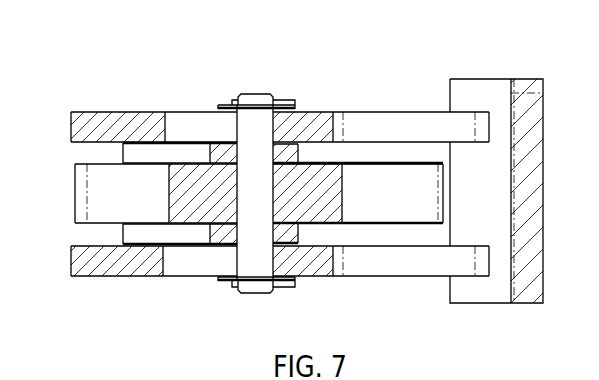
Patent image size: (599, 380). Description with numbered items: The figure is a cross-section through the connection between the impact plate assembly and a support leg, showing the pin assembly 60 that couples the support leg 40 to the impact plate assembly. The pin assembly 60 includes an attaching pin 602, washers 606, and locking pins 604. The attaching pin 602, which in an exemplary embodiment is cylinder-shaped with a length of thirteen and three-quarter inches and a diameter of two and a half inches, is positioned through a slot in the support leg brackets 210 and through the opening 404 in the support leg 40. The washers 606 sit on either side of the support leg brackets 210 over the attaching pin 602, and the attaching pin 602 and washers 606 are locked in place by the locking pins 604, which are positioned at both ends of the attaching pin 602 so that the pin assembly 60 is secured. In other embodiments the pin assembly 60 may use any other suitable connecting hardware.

The support leg 40 is at (80, 200).
The pin assembly 60 is at (227, 44).
The support leg bracket 210 is at (316, 114).
The opening 404 is at (276, 138).
The attaching pin 602 is at (259, 93).
The locking pin 604 is at (232, 102).
The washer 606 is at (220, 106).